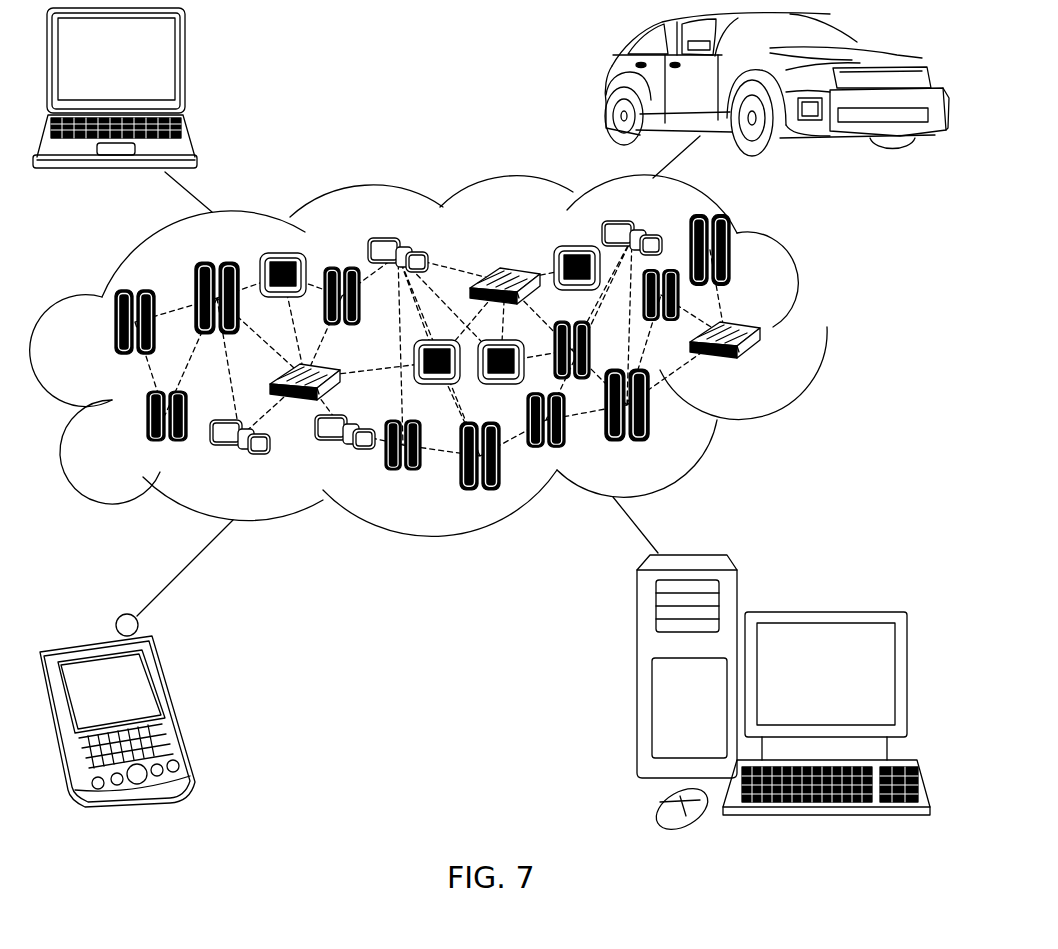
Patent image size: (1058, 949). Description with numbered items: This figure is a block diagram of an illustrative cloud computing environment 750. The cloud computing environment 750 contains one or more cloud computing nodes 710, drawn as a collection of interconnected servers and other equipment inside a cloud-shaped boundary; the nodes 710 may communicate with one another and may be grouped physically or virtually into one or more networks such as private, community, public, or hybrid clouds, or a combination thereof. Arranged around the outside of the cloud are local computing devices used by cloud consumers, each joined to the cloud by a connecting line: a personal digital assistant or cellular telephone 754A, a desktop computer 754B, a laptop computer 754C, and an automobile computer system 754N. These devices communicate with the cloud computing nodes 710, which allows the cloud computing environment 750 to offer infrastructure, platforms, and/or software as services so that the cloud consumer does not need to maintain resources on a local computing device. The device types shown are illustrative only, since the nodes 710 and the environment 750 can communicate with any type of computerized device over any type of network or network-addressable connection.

The cloud computing environment 750 is at (827, 327).
The cloud computing nodes 710 is at (767, 362).
The personal digital assistant or cellular telephone 754A is at (172, 701).
The desktop computer 754B is at (823, 613).
The laptop computer 754C is at (187, 67).
The automobile computer system 754N is at (610, 82).